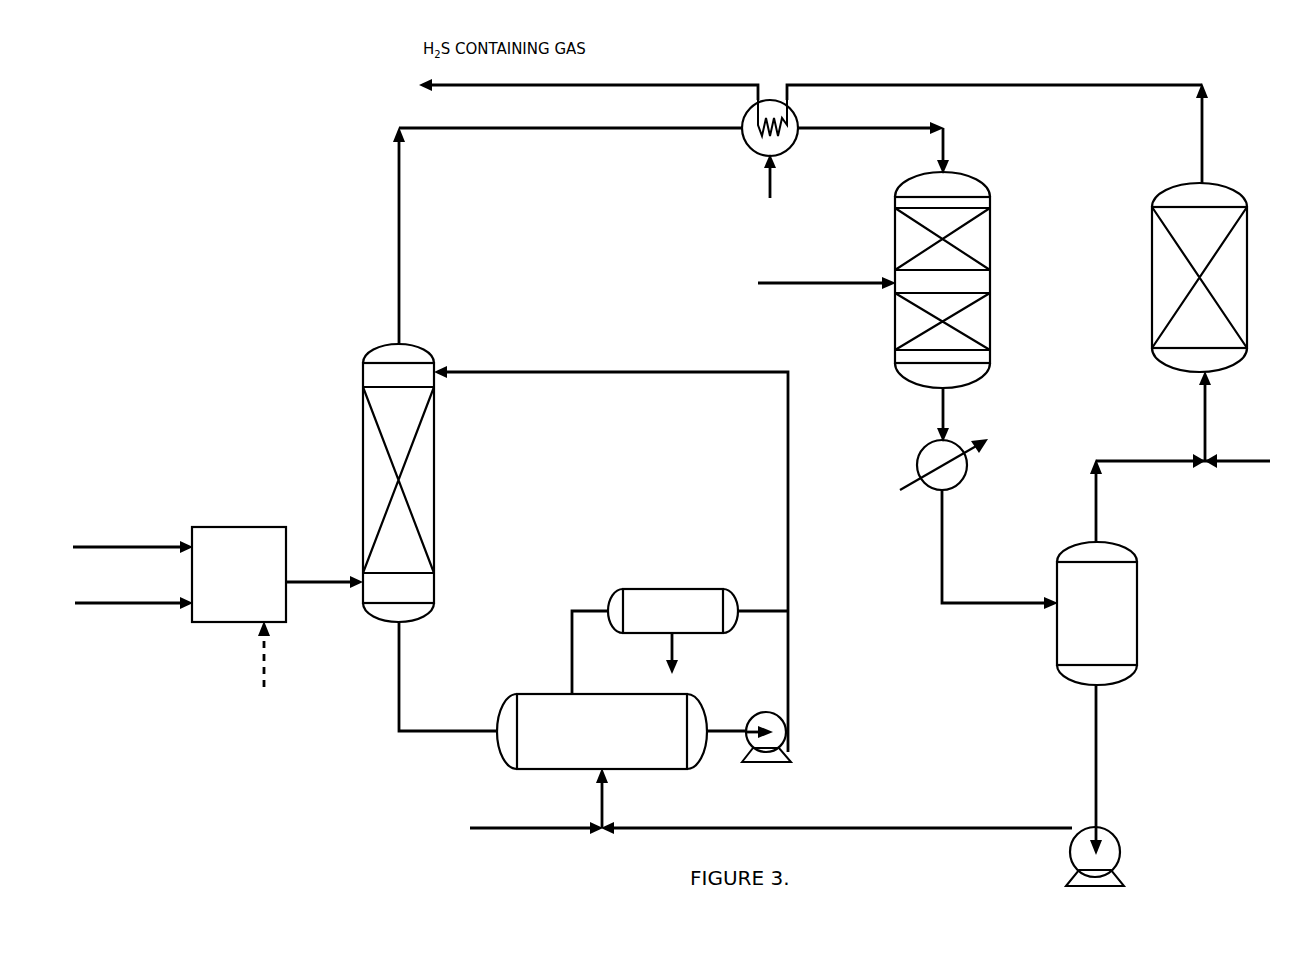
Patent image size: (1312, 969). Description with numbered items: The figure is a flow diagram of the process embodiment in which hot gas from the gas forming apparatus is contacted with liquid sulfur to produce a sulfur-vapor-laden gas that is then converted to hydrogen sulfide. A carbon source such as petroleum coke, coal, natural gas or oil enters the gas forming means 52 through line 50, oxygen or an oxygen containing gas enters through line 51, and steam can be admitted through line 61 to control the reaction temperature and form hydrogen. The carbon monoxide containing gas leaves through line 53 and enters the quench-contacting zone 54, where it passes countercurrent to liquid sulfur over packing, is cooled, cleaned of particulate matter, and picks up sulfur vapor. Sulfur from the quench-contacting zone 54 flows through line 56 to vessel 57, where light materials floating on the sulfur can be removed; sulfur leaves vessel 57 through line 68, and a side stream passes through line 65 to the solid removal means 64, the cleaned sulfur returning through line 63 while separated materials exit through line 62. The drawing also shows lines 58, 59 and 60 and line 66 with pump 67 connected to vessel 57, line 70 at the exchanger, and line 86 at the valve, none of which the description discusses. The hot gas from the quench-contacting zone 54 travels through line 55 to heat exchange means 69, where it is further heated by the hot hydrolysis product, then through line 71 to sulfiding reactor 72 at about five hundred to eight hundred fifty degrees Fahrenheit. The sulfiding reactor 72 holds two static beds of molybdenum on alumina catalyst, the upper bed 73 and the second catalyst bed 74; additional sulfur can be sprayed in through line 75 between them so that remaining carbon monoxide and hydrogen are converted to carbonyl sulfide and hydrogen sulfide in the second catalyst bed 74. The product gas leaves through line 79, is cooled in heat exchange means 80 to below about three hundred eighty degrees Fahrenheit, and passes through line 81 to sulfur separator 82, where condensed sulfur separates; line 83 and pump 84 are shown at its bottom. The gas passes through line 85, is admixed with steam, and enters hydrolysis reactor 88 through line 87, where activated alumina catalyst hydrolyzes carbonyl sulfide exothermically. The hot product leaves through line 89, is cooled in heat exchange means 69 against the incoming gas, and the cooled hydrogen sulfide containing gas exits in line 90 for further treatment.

The line 50 is at (150, 546).
The line 51 is at (125, 602).
The gas forming means 52 is at (265, 527).
The line 53 is at (325, 583).
The quench-contacting zone 54 is at (434, 470).
The line 55 is at (404, 247).
The line 56 is at (398, 708).
The vessel 57 is at (520, 694).
The steam feed line 58 is at (520, 828).
The regenerator inlet line 59 is at (598, 805).
The recycle line 60 is at (836, 812).
The line 61 is at (266, 675).
The line 62 is at (674, 656).
The line 63 is at (585, 611).
The solid removal means 64 is at (686, 589).
The line 65 is at (751, 610).
The regenerated solvent line 66 is at (715, 733).
The pump 67 is at (788, 739).
The line 68 is at (790, 653).
The heat exchange means 69 is at (745, 142).
The oxygen inlet line 70 is at (772, 187).
The line 71 is at (948, 136).
The sulfiding reactor 72 is at (895, 238).
The upper catalyst bed 73 is at (992, 243).
The second catalyst bed 74 is at (992, 322).
The line 75 is at (791, 285).
The line 79 is at (947, 412).
The heat exchange means 80 is at (968, 468).
The line 81 is at (943, 605).
The sulfur separator 82 is at (1138, 605).
The separator bottoms line 83 is at (1098, 740).
The pump 84 is at (1120, 858).
The line 85 is at (1118, 460).
The valve bypass line 86 is at (1250, 463).
The line 87 is at (1207, 415).
The hydrolysis reactor 88 is at (1248, 298).
The line 89 is at (1205, 148).
The line 90 is at (735, 83).